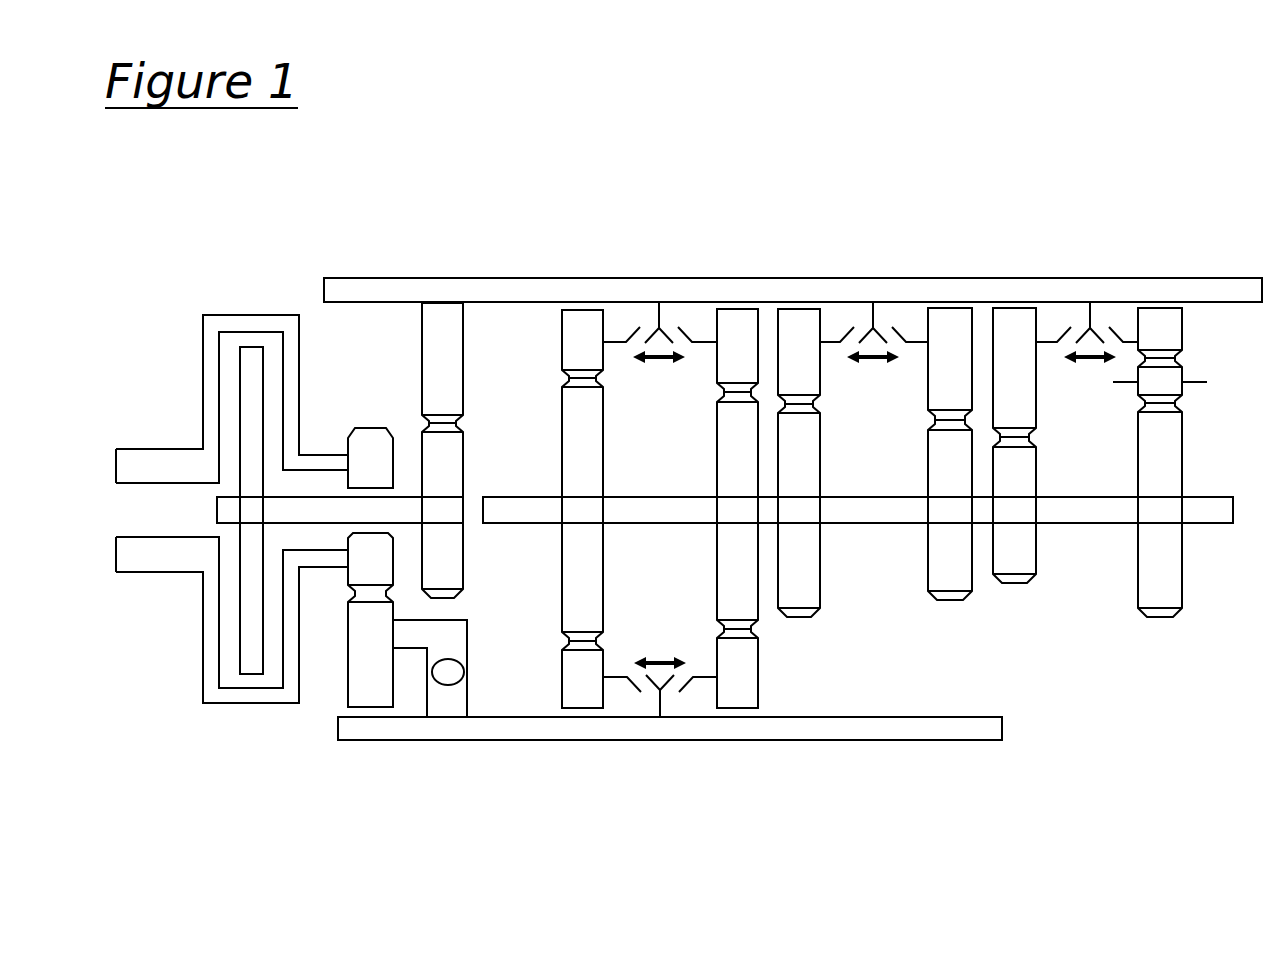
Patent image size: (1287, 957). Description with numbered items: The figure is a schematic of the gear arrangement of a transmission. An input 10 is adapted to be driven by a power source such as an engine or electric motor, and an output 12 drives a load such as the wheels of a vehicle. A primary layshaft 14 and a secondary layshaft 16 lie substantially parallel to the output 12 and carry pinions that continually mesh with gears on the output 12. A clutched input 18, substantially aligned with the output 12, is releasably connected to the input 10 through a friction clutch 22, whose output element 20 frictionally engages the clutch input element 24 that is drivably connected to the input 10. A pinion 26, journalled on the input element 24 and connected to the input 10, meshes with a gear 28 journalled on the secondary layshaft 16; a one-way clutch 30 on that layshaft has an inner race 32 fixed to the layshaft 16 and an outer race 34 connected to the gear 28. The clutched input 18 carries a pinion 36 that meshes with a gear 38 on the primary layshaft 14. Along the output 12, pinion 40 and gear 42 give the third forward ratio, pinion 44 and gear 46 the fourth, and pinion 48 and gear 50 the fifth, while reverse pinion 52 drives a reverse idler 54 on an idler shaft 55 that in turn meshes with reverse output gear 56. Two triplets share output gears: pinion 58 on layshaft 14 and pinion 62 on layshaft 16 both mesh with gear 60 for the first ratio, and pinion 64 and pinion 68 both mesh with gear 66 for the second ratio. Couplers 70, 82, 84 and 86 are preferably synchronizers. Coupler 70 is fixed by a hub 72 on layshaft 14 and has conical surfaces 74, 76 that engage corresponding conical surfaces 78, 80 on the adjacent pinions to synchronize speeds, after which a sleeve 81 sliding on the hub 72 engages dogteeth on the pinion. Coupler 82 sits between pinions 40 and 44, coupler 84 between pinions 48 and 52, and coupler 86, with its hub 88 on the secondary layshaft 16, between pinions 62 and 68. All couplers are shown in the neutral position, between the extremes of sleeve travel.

The input 10 is at (150, 560).
The output 12 is at (1218, 510).
The primary layshaft 14 is at (866, 292).
The secondary layshaft 16 is at (842, 727).
The clutched input 18 is at (447, 520).
The output element 20 is at (248, 647).
The friction clutch 22 is at (231, 454).
The input element 24 is at (208, 392).
The pinion 26 is at (375, 440).
The gear 28 is at (370, 688).
The one-way clutch 30 is at (472, 648).
The inner race 32 is at (460, 688).
The outer race 34 is at (447, 627).
The pinion 36 is at (448, 462).
The gear 38 is at (448, 347).
The pinion 40 is at (808, 355).
The gear 42 is at (808, 465).
The pinion 44 is at (938, 377).
The gear 46 is at (940, 468).
The pinion 48 is at (1023, 365).
The gear 50 is at (1023, 473).
The reverse pinion 52 is at (1168, 335).
The reverse idler 54 is at (1173, 378).
The idler shaft 55 is at (1207, 382).
The reverse output gear 56 is at (1167, 463).
The pinion 58 is at (577, 343).
The gear 60 is at (595, 475).
The pinion 62 is at (590, 660).
The pinion 64 is at (735, 362).
The gear 66 is at (735, 458).
The pinion 68 is at (745, 680).
The coupler 70 is at (681, 304).
The hub 72 is at (661, 306).
The conical surface 74 is at (700, 300).
The conical surface 76 is at (652, 322).
The conical surface 78 is at (688, 322).
The conical surface 80 is at (632, 338).
The sleeve 81 is at (640, 362).
The coupler 82 is at (899, 313).
The coupler 84 is at (1104, 310).
The coupler 86 is at (677, 732).
The hub 88 is at (657, 703).